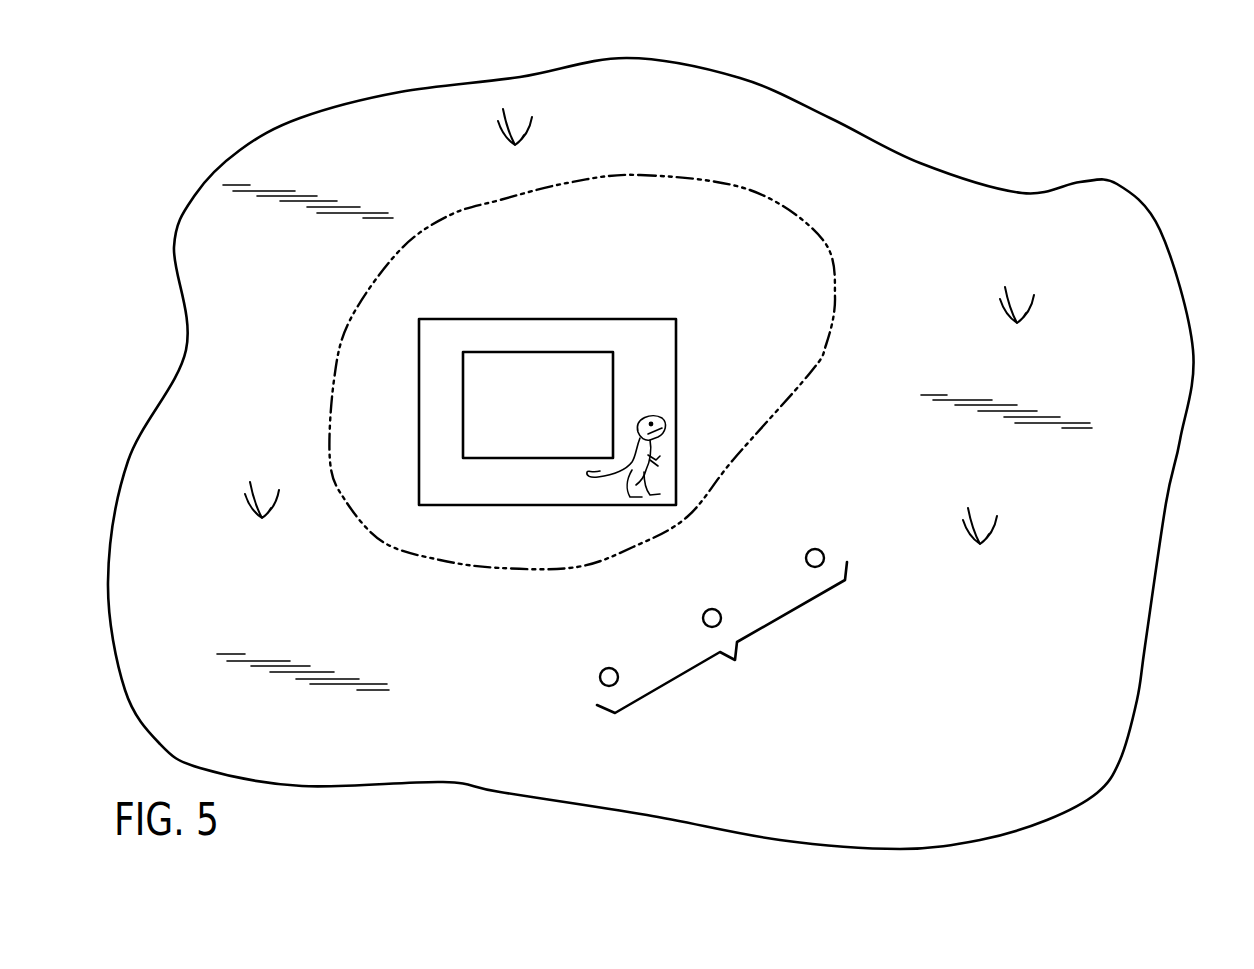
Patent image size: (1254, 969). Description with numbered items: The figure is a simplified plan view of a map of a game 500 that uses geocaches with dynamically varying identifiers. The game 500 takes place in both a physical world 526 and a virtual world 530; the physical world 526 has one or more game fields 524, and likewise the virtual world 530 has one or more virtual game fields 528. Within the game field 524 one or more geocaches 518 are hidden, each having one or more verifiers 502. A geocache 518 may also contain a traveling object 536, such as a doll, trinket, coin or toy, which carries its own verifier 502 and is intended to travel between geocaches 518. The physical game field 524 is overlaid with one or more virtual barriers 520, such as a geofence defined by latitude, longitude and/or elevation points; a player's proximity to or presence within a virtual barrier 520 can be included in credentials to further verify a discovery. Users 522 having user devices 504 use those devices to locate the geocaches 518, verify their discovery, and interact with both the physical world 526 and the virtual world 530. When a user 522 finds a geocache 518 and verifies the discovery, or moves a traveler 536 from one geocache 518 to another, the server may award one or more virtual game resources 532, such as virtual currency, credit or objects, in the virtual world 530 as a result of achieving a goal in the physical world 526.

The game 500 is at (930, 72).
The physical world 526 is at (973, 117).
The game field 524 is at (1022, 193).
The virtual barrier 520 is at (810, 373).
The geocache 518 is at (598, 318).
The verifier 502 is at (538, 351).
The traveling object 536 is at (648, 418).
The user 522 is at (737, 637).
The user device 504 is at (737, 637).
The virtual world 530 is at (737, 637).
The virtual game field 528 is at (737, 637).
The virtual game resource 532 is at (737, 637).